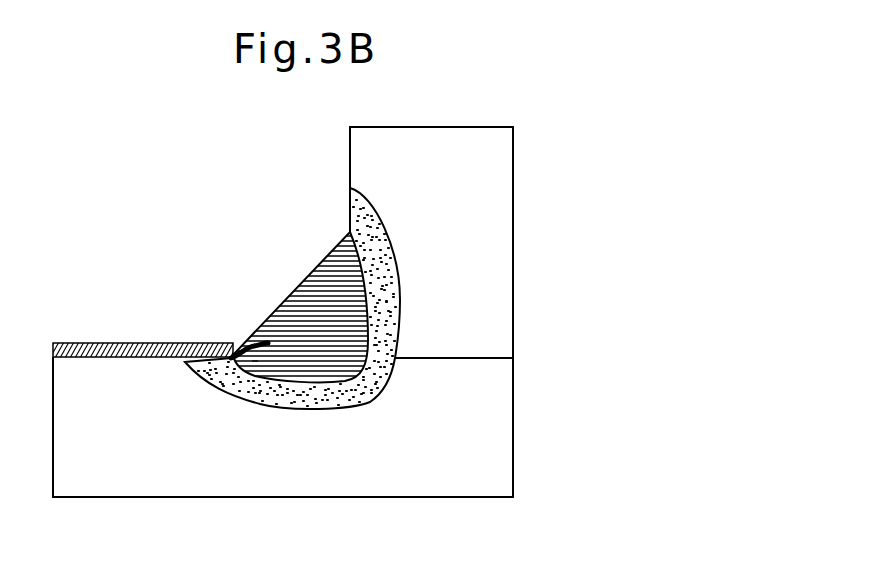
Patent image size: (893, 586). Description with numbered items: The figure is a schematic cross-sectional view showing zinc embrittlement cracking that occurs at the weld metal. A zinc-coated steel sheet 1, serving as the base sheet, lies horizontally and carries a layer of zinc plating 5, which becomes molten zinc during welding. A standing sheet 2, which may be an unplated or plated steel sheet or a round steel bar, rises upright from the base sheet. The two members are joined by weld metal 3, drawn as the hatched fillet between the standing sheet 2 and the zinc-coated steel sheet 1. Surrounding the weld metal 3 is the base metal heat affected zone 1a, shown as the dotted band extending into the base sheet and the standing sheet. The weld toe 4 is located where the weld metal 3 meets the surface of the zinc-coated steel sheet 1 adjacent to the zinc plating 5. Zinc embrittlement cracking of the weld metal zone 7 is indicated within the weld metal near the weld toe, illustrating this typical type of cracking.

The zinc-coated steel sheet 1 is at (488, 407).
The base metal heat affected zone 1a is at (362, 388).
The standing sheet 2 is at (488, 187).
The weld metal 3 is at (333, 292).
The weld toe 4 is at (237, 342).
The zinc plating 5 is at (146, 347).
The zinc embrittlement cracking of weld metal zone 7 is at (255, 365).